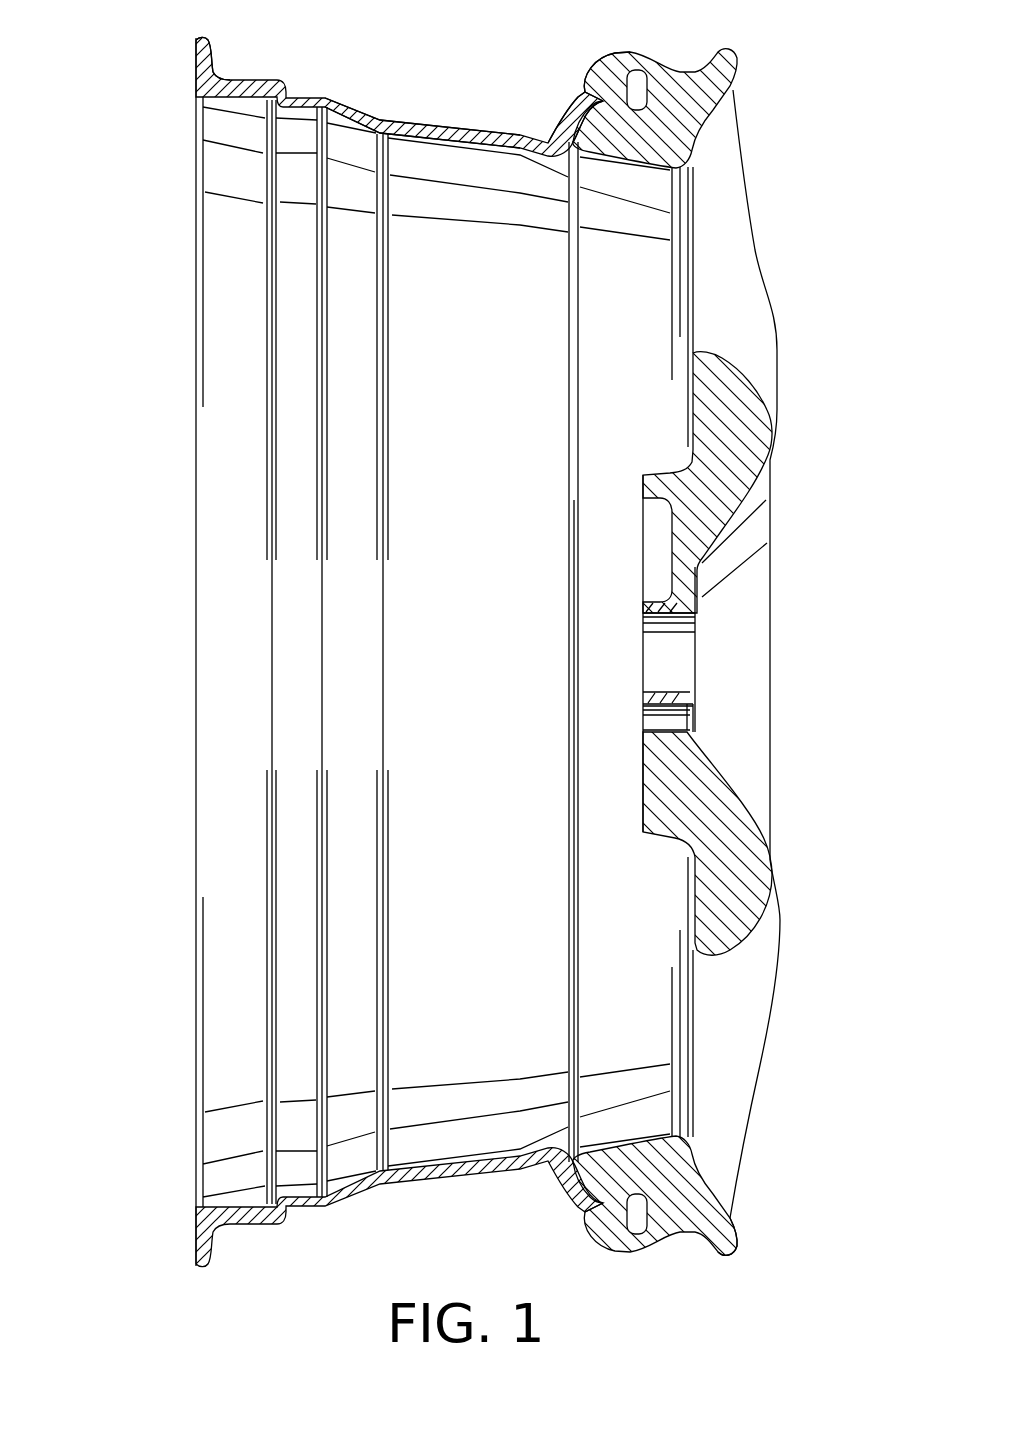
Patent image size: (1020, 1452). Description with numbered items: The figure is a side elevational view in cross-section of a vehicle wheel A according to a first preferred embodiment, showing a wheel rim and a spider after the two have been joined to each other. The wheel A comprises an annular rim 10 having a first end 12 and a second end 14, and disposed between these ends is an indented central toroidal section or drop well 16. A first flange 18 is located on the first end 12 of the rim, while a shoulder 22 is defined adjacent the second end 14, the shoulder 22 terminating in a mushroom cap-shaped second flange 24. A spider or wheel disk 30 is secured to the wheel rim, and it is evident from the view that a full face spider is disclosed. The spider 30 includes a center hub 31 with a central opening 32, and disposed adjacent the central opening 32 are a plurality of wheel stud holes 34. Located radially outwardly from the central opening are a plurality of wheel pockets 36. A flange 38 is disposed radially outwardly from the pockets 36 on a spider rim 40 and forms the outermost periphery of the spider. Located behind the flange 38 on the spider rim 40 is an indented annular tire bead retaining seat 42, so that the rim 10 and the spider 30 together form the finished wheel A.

The vehicle wheel A is at (190, 718).
The annular rim 10 is at (370, 1202).
The first end 12 is at (233, 100).
The second end 14 is at (618, 92).
The drop well 16 is at (497, 130).
The first flange 18 is at (203, 53).
The shoulder 22 is at (587, 157).
The second flange 24 is at (643, 80).
The spider 30 is at (776, 428).
The center hub 31 is at (657, 815).
The central opening 32 is at (660, 620).
The wheel stud holes 34 is at (642, 737).
The wheel pockets 36 is at (693, 977).
The flange 38 is at (730, 1253).
The spider rim 40 is at (670, 150).
The tire bead retaining seat 42 is at (682, 1233).